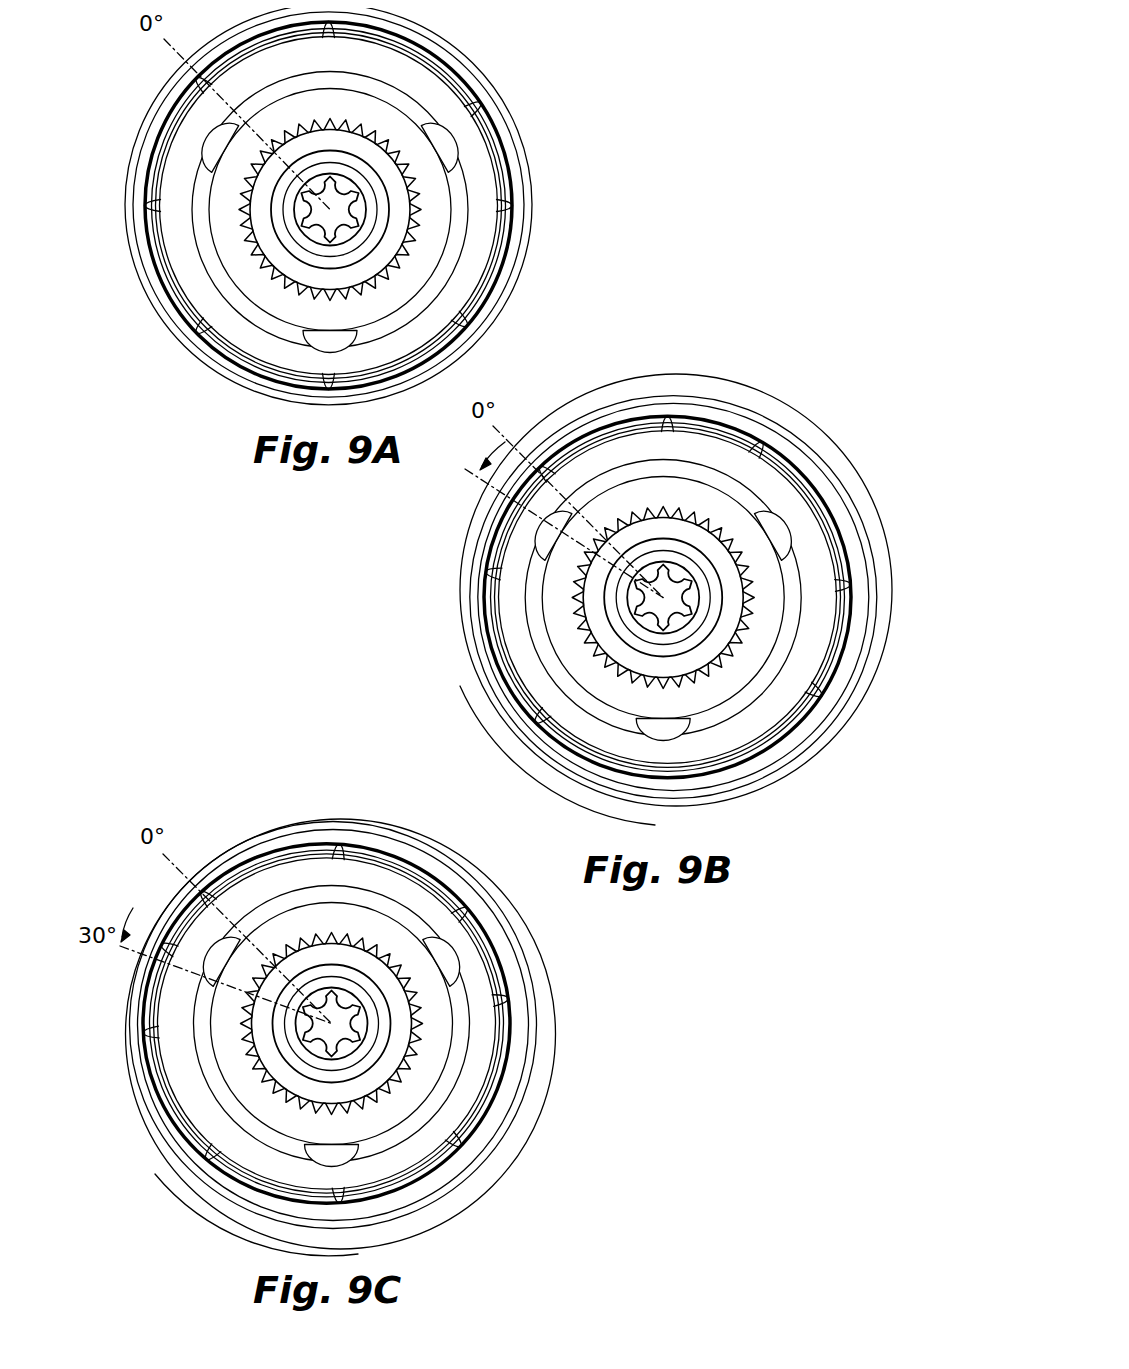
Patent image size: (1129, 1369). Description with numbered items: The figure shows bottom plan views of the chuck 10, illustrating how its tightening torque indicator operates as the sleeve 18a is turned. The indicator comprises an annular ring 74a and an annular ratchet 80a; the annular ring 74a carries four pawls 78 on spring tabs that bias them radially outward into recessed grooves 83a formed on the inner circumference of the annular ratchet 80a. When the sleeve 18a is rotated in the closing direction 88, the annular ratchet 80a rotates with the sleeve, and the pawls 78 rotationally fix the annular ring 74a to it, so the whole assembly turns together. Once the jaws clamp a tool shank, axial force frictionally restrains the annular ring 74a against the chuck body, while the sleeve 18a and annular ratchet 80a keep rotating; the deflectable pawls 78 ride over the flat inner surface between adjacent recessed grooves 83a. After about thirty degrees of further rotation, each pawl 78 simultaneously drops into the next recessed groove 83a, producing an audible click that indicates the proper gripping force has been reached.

In FIG. 9A, the chuck 10 is at (158, 326).
In FIG. 9B, the chuck 10 is at (445, 640).
In FIG. 9C, the chuck 10 is at (137, 1124).
In FIG. 9A, the sleeve 18a is at (520, 122).
In FIG. 9B, the sleeve 18a is at (850, 460).
In FIG. 9C, the sleeve 18a is at (341, 1034).
In FIG. 9A, the annular ring 74a is at (464, 104).
In FIG. 9B, the annular ring 74a is at (745, 448).
In FIG. 9C, the annular ring 74a is at (494, 1000).
In FIG. 9A, the pawls 78 is at (463, 322).
In FIG. 9B, the pawls 78 is at (835, 742).
In FIG. 9C, the pawls 78 is at (510, 1161).
In FIG. 9A, the annular ratchet 80a is at (509, 232).
In FIG. 9B, the annular ratchet 80a is at (842, 593).
In FIG. 9C, the annular ratchet 80a is at (481, 1110).
In FIG. 9A, the recessed grooves 83a is at (501, 270).
In FIG. 9B, the recessed grooves 83a is at (842, 628).
In FIG. 9C, the recessed grooves 83a is at (503, 1084).
In FIG. 9B, the closing direction 88 is at (477, 705).
In FIG. 9C, the closing direction 88 is at (168, 1188).